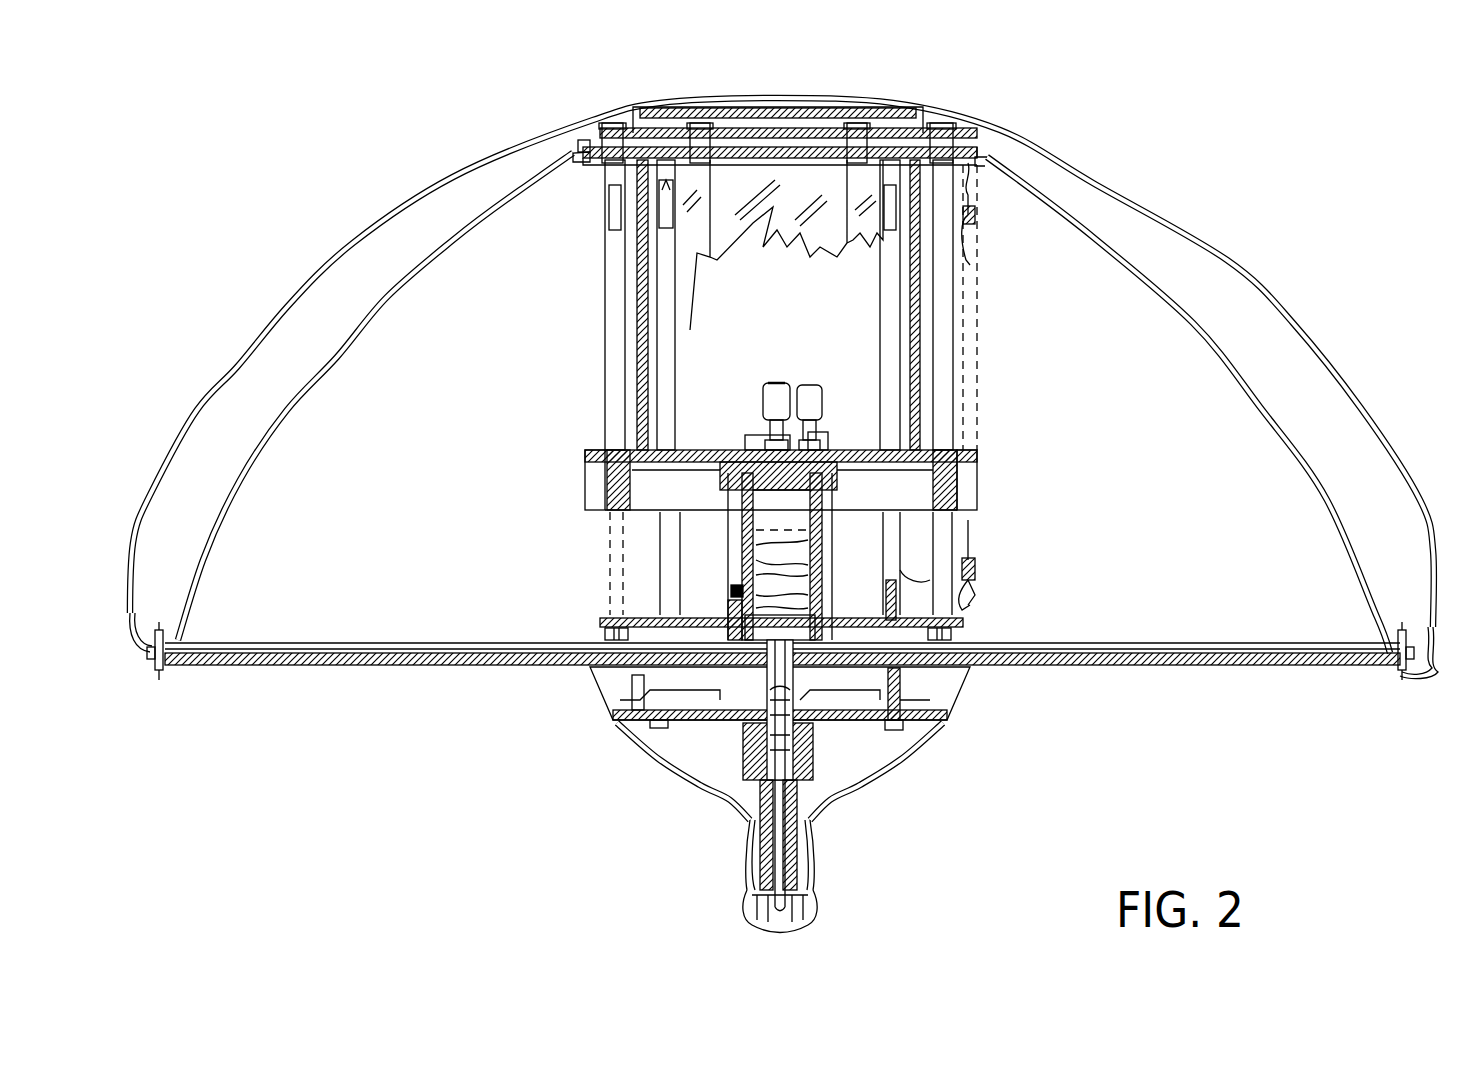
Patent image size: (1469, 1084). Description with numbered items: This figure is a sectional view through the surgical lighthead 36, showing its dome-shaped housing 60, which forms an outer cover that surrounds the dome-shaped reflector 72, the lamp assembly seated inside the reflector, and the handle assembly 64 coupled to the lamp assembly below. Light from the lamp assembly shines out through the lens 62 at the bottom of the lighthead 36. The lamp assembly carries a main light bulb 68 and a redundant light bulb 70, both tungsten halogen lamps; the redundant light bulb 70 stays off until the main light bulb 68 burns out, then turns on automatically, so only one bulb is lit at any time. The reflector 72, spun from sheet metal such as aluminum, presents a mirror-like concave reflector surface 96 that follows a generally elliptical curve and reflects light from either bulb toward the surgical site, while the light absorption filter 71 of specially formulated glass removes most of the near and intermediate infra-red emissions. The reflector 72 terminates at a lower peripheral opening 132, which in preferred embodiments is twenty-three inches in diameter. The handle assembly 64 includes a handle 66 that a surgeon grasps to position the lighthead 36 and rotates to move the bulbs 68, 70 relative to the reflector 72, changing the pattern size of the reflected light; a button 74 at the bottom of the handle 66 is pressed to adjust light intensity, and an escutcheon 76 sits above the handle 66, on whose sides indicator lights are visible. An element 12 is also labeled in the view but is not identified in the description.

The lamp/electrical lead assembly 12 is at (978, 290).
The surgical lighthead 36 is at (784, 388).
The dome-shaped housing 60 is at (455, 178).
The lens 62 is at (780, 659).
The handle assembly 64 is at (748, 805).
The handle 66 is at (748, 872).
The main light bulb 68 is at (773, 400).
The redundant light bulb 70 is at (818, 406).
The light absorption filter 71 is at (638, 277).
The reflector 72 is at (784, 402).
The button 74 is at (788, 926).
The escutcheon 76 is at (958, 684).
The concave reflector surface 96 is at (1238, 397).
The lower peripheral opening 132 is at (338, 637).